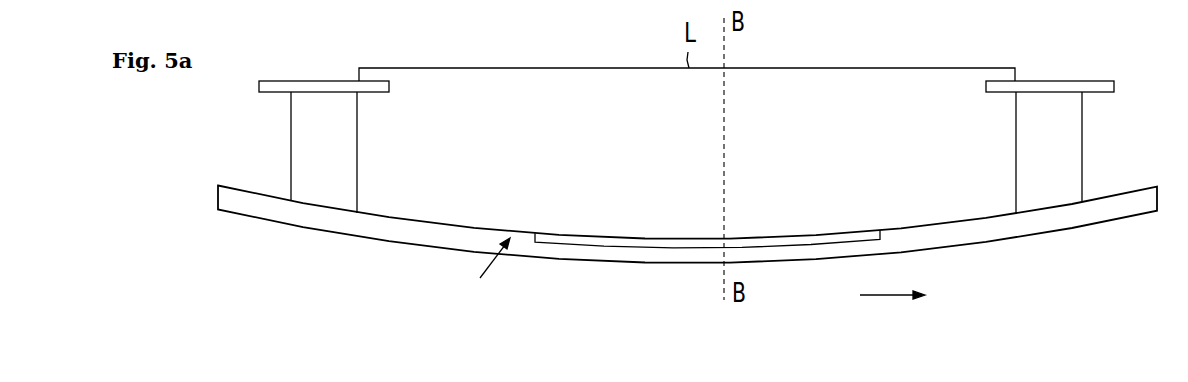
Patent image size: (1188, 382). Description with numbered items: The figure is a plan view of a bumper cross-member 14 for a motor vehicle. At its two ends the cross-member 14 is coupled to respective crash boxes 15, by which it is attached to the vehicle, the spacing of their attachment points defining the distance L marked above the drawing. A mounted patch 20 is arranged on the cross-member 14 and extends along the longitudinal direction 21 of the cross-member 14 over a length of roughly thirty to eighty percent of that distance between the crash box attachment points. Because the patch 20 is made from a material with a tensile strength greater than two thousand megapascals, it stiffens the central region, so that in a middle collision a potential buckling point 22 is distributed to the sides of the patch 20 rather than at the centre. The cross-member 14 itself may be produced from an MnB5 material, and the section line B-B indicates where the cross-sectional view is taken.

The cross-member 14 is at (1000, 238).
The crash boxes 15 is at (305, 140).
The patch 20 is at (838, 236).
The longitudinal direction 21 is at (892, 279).
The buckling point 22 is at (486, 275).